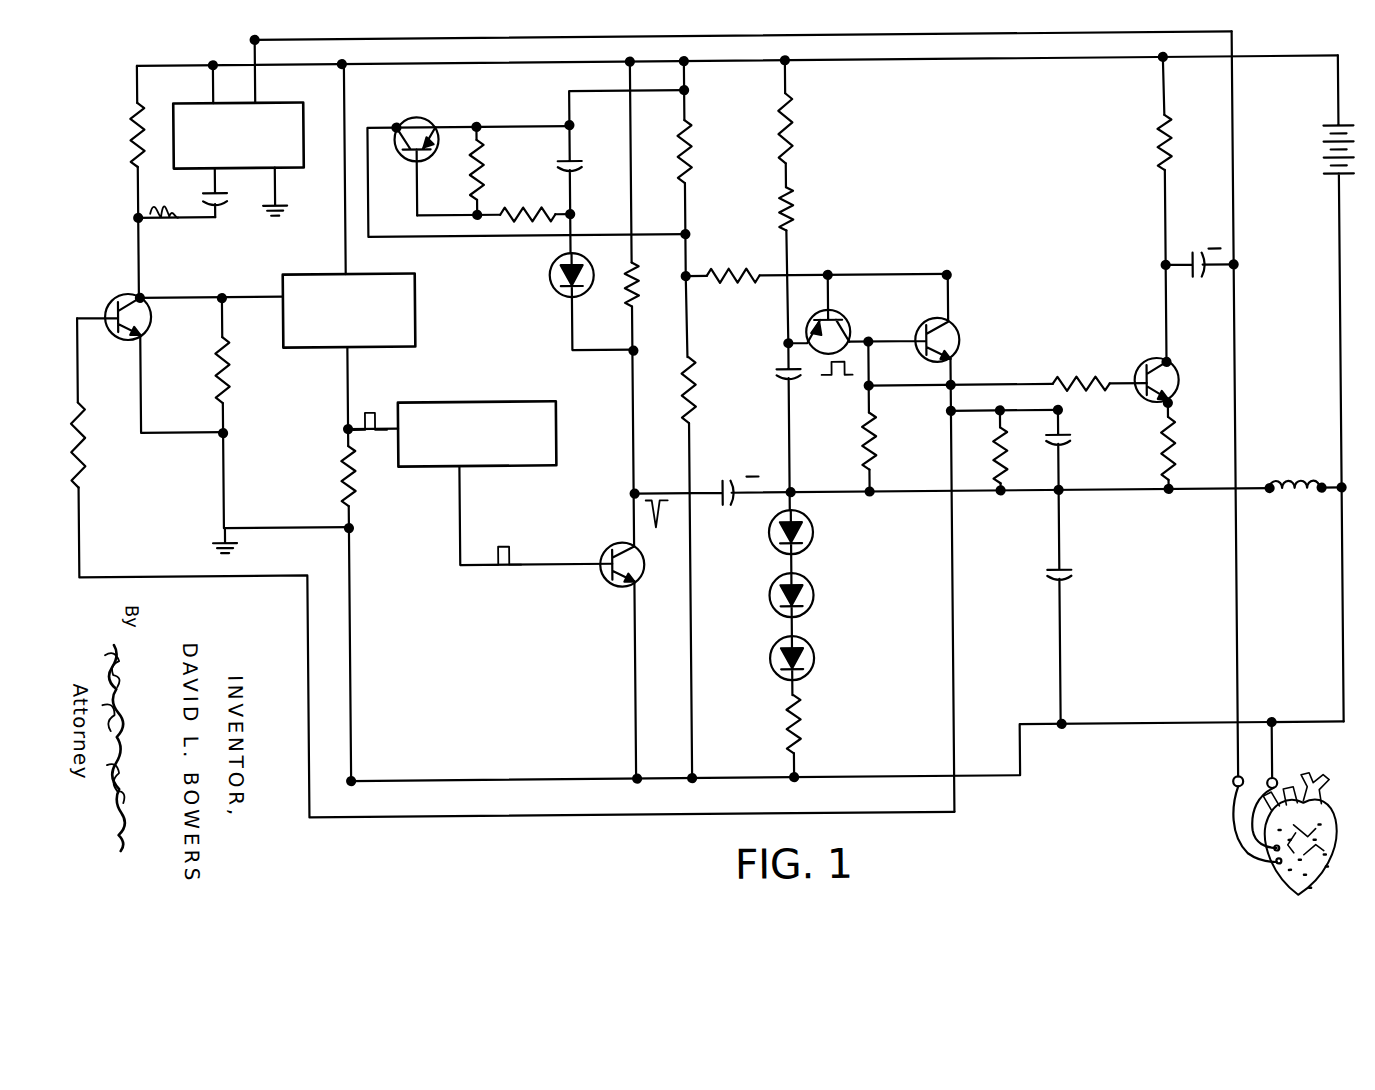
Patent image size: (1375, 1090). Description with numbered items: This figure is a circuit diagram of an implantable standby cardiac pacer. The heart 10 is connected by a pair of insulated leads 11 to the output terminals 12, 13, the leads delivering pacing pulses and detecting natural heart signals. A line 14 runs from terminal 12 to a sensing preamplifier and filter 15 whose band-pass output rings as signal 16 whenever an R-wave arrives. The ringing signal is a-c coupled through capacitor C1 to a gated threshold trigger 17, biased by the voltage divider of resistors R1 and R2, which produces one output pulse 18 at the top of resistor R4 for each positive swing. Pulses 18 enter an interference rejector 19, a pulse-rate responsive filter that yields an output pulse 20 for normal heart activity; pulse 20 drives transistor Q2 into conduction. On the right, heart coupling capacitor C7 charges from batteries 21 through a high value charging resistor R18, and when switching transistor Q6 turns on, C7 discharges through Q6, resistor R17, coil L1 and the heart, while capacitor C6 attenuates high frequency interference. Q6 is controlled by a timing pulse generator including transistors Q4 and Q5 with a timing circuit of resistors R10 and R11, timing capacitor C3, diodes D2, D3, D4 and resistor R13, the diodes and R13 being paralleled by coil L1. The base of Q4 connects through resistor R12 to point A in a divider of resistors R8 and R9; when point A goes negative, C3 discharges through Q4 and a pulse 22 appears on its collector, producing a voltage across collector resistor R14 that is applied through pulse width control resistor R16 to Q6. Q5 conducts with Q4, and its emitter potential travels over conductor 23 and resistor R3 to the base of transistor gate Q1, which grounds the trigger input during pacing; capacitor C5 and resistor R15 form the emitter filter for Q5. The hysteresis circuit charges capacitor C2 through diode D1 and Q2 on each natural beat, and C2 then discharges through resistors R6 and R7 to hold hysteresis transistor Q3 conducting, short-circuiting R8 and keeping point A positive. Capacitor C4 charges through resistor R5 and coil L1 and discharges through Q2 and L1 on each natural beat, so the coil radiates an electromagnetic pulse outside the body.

The heart 10 is at (1276, 876).
The insulated leads 11 is at (1240, 822).
The output terminal 12 is at (1230, 786).
The output terminal 13 is at (1276, 786).
The line 14 is at (1238, 364).
The sensing preamplifier and filter 15 is at (192, 97).
The ringing signal 16 is at (168, 195).
The gated threshold trigger 17 is at (310, 271).
The output pulse 18 is at (370, 409).
The interference rejector 19 is at (470, 400).
The output pulse 20 is at (505, 545).
The batteries 21 is at (1321, 145).
The pulse 22 is at (835, 384).
The conductor 23 is at (960, 635).
The point A is at (688, 280).
The resistor R1 is at (120, 132).
The resistor R2 is at (228, 374).
The resistor R3 is at (68, 434).
The resistor R4 is at (334, 472).
The resistor R5 is at (638, 283).
The discharge resistor R6 is at (539, 202).
The discharge resistor R7 is at (488, 176).
The resistor R8 is at (694, 158).
The resistor R9 is at (682, 396).
The resistor R10 is at (790, 134).
The resistor R11 is at (798, 206).
The resistor R12 is at (728, 270).
The resistor R13 is at (803, 730).
The collector resistor R14 is at (882, 437).
The resistor R15 is at (1007, 449).
The pulse width control resistor R16 is at (1080, 374).
The resistor R17 is at (1173, 437).
The charging resistor R18 is at (1161, 139).
The capacitor C1 is at (235, 195).
The capacitor C2 is at (594, 166).
The timing capacitor C3 is at (768, 377).
The capacitor C4 is at (728, 481).
The capacitor C5 is at (1073, 441).
The capacitor C6 is at (1082, 579).
The heart coupling capacitor C7 is at (1206, 283).
The transistor gate Q1 is at (114, 288).
The transistor Q2 is at (647, 572).
The hysteresis transistor Q3 is at (430, 117).
The transistor Q4 is at (846, 317).
The transistor Q5 is at (960, 323).
The switching transistor Q6 is at (1153, 357).
The diode D1 is at (548, 282).
The diode D2 is at (815, 533).
The diode D3 is at (815, 596).
The diode D4 is at (815, 659).
The coil L1 is at (1306, 462).